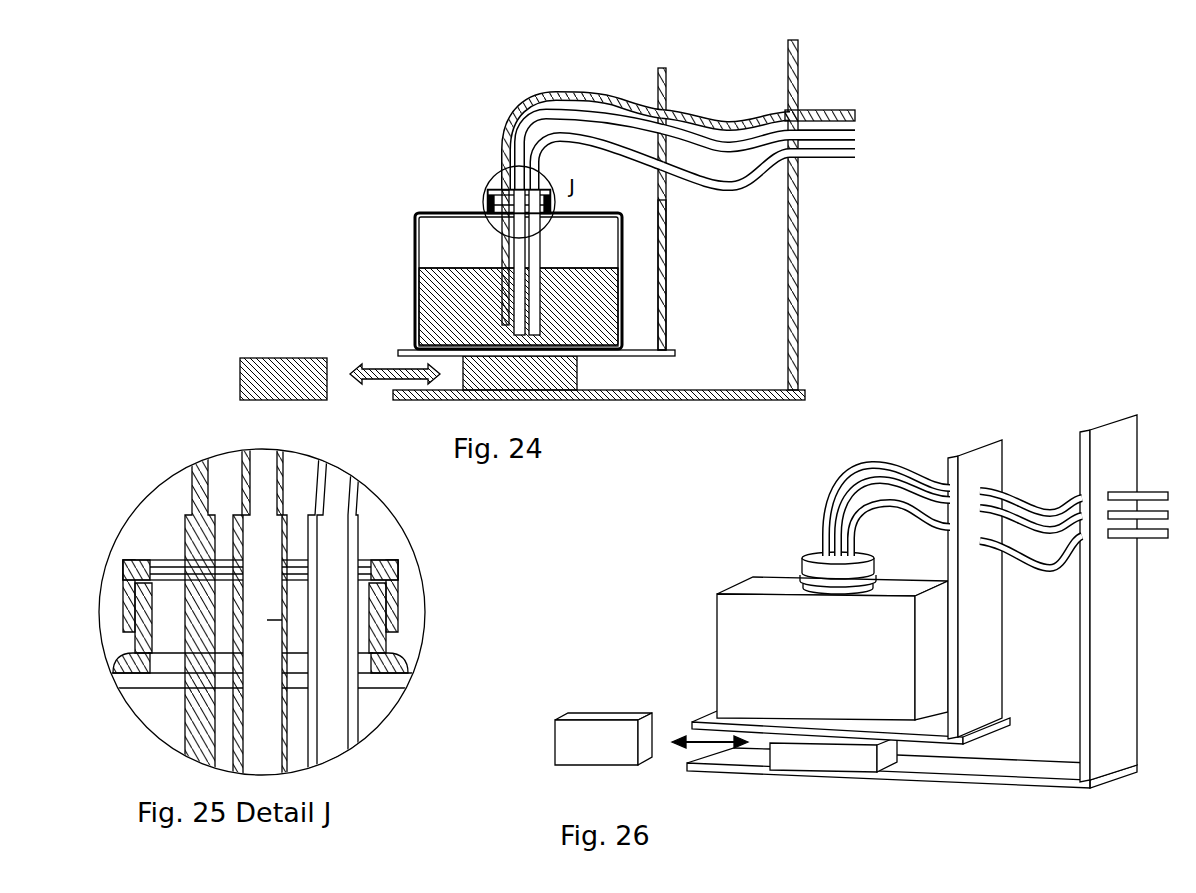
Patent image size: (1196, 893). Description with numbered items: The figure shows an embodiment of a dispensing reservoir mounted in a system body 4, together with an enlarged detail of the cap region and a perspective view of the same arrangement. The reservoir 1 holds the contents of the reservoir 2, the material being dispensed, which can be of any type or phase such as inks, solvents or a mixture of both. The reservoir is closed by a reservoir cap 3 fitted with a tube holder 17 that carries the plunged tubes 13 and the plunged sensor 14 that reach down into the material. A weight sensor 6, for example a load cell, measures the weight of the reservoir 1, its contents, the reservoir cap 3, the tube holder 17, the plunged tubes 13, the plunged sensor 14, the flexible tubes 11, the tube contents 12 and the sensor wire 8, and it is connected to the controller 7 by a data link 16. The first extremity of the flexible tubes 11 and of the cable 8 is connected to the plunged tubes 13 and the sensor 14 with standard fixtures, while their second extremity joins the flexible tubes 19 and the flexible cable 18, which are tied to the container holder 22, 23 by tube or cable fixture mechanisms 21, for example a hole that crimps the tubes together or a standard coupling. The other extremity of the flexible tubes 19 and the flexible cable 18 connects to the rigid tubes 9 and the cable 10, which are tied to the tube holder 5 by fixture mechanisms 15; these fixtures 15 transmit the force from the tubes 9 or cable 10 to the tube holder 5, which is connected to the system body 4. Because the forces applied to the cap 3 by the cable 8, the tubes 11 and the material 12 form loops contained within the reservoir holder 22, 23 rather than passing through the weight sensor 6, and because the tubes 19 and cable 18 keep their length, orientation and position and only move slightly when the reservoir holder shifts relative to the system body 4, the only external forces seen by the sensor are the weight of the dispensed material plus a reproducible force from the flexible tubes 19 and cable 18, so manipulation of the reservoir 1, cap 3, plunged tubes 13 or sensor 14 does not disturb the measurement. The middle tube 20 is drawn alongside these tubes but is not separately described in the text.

The reservoir 1 is at (407, 228).
The contents of the reservoir 2 is at (450, 312).
The reservoir cap 3 is at (483, 185).
The system body 4 is at (733, 388).
The tube holder 5 is at (803, 262).
The weight sensor 6 is at (580, 379).
The controller 7 is at (250, 357).
The sensor wire 8 is at (541, 92).
The rigid tubes 9 is at (843, 158).
The cable 10 is at (836, 112).
The flexible tubes 11 is at (580, 138).
The tube contents 12 is at (506, 128).
The plunged tubes 13 is at (505, 247).
The plunged sensor 14 is at (497, 262).
The tube or cable fixture mechanisms 15 is at (800, 112).
The data link 16 is at (383, 386).
The tube holder 17 is at (497, 183).
The flexible cable 18 is at (684, 108).
The flexible tubes 19 is at (733, 192).
The middle tube 20 is at (781, 135).
The tube or cable fixture mechanisms 21 is at (657, 108).
The container holder 22 is at (393, 349).
The container holder 23 is at (672, 306).